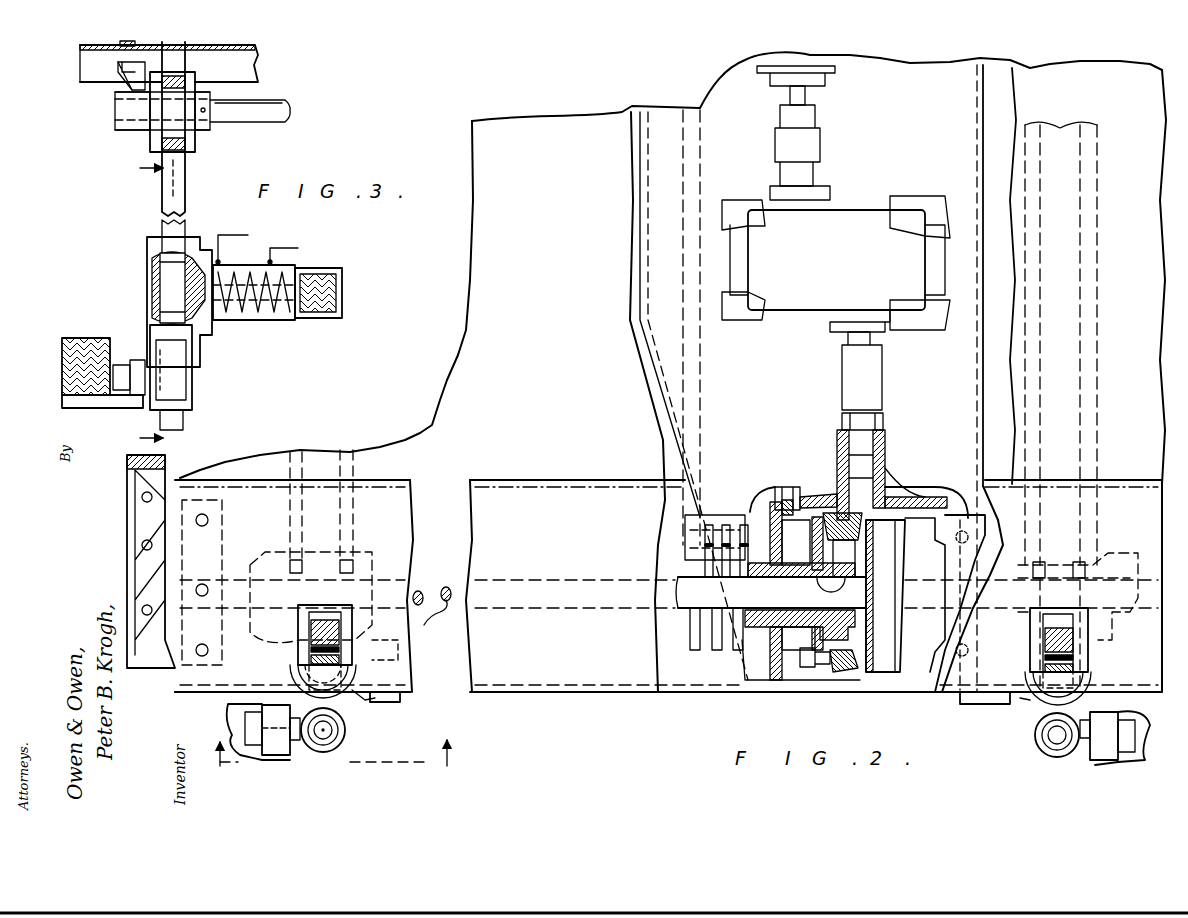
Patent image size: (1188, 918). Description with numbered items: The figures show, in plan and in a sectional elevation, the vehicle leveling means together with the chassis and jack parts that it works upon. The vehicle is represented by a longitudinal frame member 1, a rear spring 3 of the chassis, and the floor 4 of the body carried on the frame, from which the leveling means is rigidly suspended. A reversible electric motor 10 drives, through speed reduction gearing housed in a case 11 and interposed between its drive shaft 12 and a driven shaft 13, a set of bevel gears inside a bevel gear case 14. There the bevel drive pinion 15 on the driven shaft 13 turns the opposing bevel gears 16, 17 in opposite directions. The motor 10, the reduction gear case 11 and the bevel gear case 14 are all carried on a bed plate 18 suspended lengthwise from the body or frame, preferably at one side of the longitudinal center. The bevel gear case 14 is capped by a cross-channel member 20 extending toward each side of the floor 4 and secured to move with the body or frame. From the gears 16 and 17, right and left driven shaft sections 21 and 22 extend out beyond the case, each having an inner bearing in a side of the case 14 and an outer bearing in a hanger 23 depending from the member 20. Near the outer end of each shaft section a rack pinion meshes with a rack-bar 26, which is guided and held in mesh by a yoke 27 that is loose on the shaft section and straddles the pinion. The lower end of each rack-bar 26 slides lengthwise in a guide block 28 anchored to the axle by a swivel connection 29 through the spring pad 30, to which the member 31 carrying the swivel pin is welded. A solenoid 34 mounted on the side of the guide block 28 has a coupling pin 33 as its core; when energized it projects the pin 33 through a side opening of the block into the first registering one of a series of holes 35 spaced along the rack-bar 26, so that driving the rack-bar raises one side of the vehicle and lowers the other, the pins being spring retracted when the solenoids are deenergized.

In FIG. 2, the longitudinal frame member 1 is at (127, 470).
In FIG. 3, the rear spring 3 is at (62, 370).
In FIG. 2, the rear spring 3 is at (332, 763).
In FIG. 3, the floor 4 is at (140, 306).
In FIG. 2, the electric motor 10 is at (832, 62).
In FIG. 2, the reduction gear case 11 is at (836, 259).
In FIG. 2, the drive shaft 12 is at (805, 96).
In FIG. 2, the driven shaft 13 is at (848, 340).
In FIG. 2, the bevel gear case 14 is at (905, 497).
In FIG. 2, the bevel drive pinion 15 is at (812, 515).
In FIG. 2, the bevel gear 16 is at (885, 596).
In FIG. 2, the bevel gear 17 is at (812, 545).
In FIG. 2, the bed plate 18 is at (673, 372).
In FIG. 3, the cross-channel member 20 is at (255, 58).
In FIG. 2, the cross-channel member 20 is at (540, 678).
In FIG. 2, the right driven shaft section 21 is at (1000, 590).
In FIG. 3, the left driven shaft section 22 is at (275, 88).
In FIG. 2, the left driven shaft section 22 is at (639, 593).
In FIG. 3, the hanger 23 is at (128, 82).
In FIG. 2, the hanger 23 is at (265, 550).
In FIG. 3, the rack-bar 26 is at (178, 192).
In FIG. 2, the rack-bar 26 is at (340, 635).
In FIG. 3, the yoke 27 is at (192, 145).
In FIG. 2, the yoke 27 is at (298, 640).
In FIG. 2, the guide block 28 is at (345, 702).
In FIG. 3, the swivel connection 29 is at (185, 392).
In FIG. 2, the swivel connection 29 is at (318, 745).
In FIG. 3, the spring pad 30 is at (125, 402).
In FIG. 2, the spring pad 30 is at (282, 760).
In FIG. 3, the swivel pin carrying member 31 is at (137, 360).
In FIG. 2, the swivel pin carrying member 31 is at (278, 705).
In FIG. 3, the coupling pin 33 is at (203, 330).
In FIG. 3, the solenoid 34 is at (262, 322).
In FIG. 2, the solenoid 34 is at (398, 702).
In FIG. 3, the holes 35 is at (170, 292).